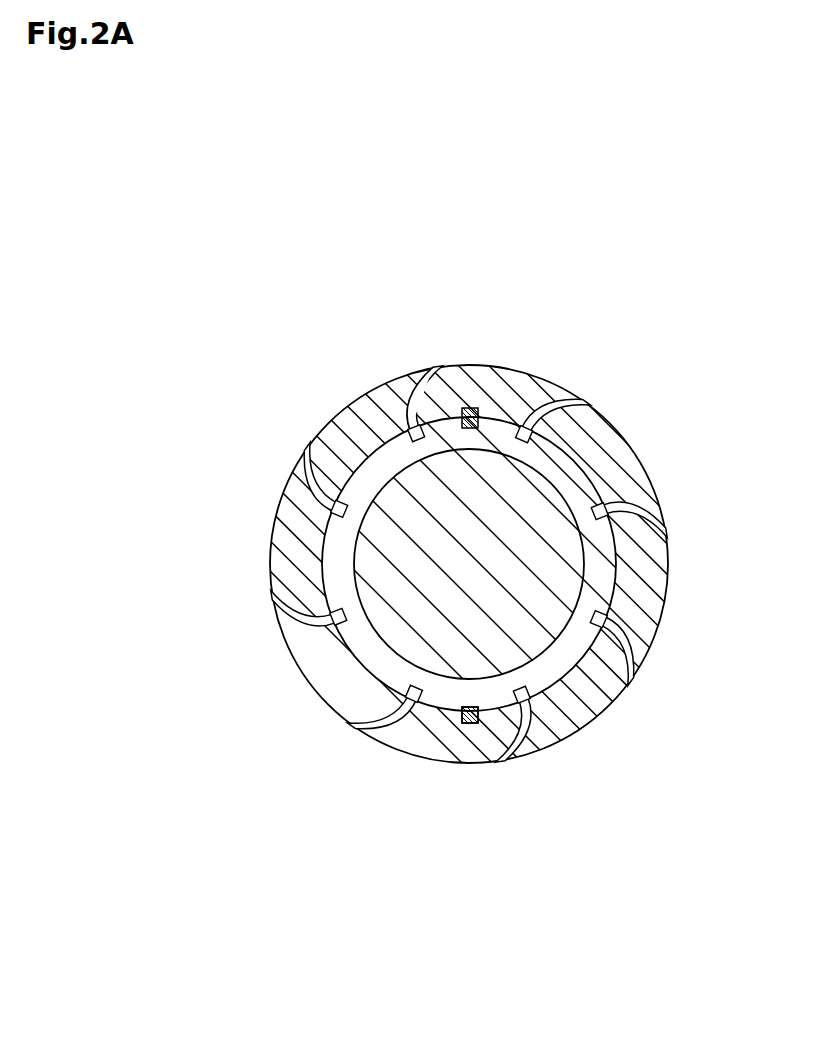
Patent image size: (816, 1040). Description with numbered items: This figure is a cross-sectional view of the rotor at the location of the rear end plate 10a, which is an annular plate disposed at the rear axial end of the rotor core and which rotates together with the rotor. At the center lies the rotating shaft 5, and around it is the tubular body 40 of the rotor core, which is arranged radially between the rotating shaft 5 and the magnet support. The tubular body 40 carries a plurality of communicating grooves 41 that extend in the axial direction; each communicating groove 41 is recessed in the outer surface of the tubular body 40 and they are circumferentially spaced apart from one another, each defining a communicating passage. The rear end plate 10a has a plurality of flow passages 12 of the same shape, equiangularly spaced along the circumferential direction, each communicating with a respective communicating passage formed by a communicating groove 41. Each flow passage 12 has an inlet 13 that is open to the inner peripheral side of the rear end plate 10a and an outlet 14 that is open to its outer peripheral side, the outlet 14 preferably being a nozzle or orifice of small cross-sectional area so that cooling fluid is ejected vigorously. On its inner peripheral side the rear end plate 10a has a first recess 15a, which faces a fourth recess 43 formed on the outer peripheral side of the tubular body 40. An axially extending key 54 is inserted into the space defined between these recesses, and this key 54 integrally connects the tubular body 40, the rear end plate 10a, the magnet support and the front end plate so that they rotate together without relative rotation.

The rear end plate 10a is at (509, 316).
The rotating shaft 5 is at (393, 638).
The flow passage 12 is at (393, 399).
The inlet 13 is at (404, 441).
The outlet 14 is at (427, 375).
The first recess 15a is at (462, 724).
The tubular body 40 is at (557, 670).
The communicating groove 41 is at (598, 625).
The fourth recess 43 is at (480, 697).
The key 54 is at (480, 697).